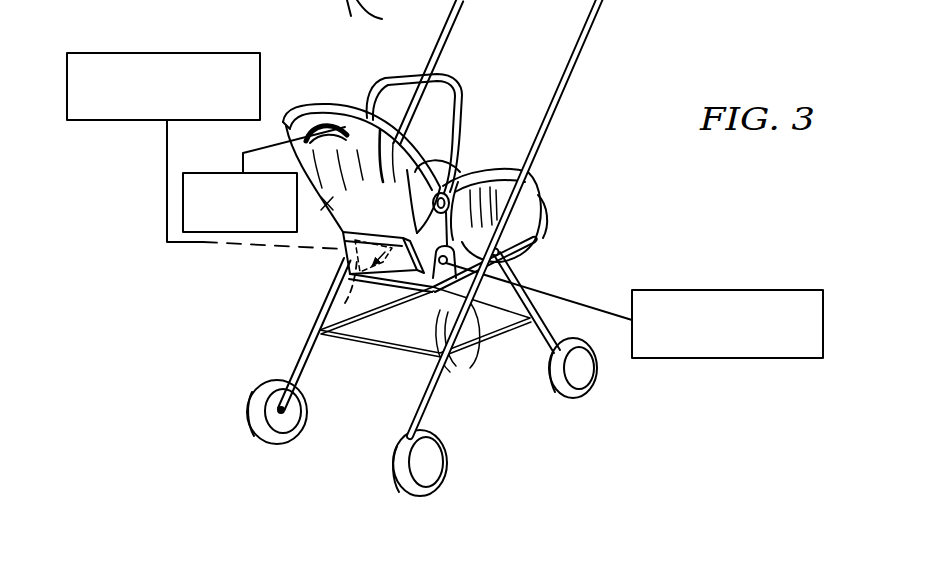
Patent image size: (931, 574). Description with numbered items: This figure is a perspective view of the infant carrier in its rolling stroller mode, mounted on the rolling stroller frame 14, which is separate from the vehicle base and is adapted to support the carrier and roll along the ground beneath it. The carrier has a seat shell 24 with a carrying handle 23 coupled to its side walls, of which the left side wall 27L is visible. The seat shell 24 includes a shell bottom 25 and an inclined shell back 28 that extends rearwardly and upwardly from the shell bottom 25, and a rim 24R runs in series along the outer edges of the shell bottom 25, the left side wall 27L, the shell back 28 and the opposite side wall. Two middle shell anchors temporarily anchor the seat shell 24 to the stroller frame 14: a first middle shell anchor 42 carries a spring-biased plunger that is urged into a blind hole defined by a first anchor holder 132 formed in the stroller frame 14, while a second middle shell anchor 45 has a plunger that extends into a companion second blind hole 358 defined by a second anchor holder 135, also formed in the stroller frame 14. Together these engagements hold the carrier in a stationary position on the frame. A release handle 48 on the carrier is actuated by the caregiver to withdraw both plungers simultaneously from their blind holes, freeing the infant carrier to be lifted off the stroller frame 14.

The stroller frame 14 is at (586, 63).
The carrying handle 23 is at (405, 72).
The seat shell 24 is at (336, 100).
The rim 24R is at (430, 165).
The left side wall 27L is at (474, 185).
The shell bottom 25 is at (524, 212).
The shell back 28 is at (365, 249).
The second blind hole 358 is at (340, 266).
The second anchor holder 135 is at (345, 303).
The first anchor holder 132 is at (460, 284).
The first middle shell anchor 42 is at (122, 121).
The release handle 48 is at (214, 173).
The second middle shell anchor 45 is at (720, 289).